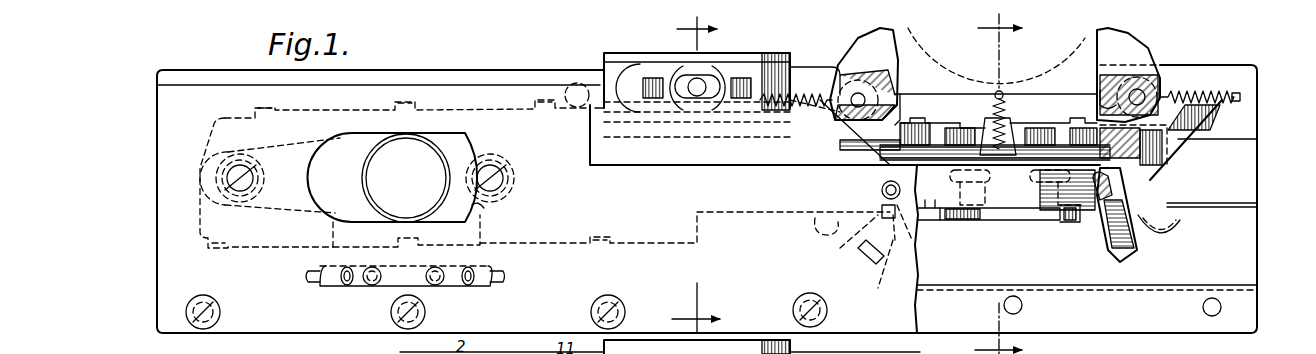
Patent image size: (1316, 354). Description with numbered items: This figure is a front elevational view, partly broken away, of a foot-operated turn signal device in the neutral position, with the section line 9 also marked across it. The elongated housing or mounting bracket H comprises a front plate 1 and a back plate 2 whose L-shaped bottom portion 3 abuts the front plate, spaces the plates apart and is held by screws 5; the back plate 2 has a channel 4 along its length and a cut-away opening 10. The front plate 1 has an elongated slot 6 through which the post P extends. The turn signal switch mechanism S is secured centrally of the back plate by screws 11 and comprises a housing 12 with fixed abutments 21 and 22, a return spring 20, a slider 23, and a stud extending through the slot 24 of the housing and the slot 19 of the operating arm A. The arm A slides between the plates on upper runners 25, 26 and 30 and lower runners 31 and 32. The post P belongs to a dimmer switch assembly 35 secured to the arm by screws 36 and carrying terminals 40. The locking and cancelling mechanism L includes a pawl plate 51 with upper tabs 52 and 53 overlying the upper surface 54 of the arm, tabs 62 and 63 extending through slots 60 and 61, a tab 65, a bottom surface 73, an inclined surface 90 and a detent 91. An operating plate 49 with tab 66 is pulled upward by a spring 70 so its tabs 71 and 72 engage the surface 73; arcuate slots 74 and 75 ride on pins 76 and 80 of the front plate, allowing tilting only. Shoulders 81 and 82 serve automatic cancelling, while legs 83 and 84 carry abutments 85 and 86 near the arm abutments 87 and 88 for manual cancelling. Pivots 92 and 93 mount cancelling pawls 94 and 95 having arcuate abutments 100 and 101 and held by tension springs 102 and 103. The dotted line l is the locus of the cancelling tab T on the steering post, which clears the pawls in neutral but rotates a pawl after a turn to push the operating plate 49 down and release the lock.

The front plate 1 is at (364, 85).
The back plate 2 is at (435, 70).
The L-shaped bottom portion 3 is at (1045, 285).
The channel 4 is at (1225, 142).
The screws 5 is at (141, 208).
The elongated slot 6 is at (480, 205).
The section line 9 is at (687, 175).
The opening 10 is at (1010, 184).
The screws 11 is at (572, 85).
The housing 12 is at (612, 60).
The slot 19 is at (705, 84).
The return spring 20 is at (658, 100).
The fixed abutment 21 is at (640, 90).
The fixed abutment 22 is at (742, 98).
The slider 23 is at (655, 75).
The slot 24 is at (742, 75).
The upper runner 25 is at (262, 108).
The upper runner 26 is at (548, 104).
The upper runner 30 is at (410, 106).
The lower runner 31 is at (222, 250).
The lower runner 32 is at (608, 243).
The dimmer switch assembly 35 is at (355, 127).
The screws 36 is at (262, 185).
The terminals 40 is at (340, 286).
The operating plate 49 is at (985, 195).
The pawl plate 51 is at (1178, 150).
The upper tab 52 is at (932, 112).
The upper tab 53 is at (1078, 117).
The upper surface 54 is at (960, 128).
The slot 60 is at (845, 120).
The slot 61 is at (1148, 150).
The tab 62 is at (948, 178).
The tab 63 is at (1055, 172).
The tab 65 is at (1005, 97).
The tab 66 is at (1003, 160).
The spring 70 is at (1012, 115).
The tab 71 is at (936, 220).
The tab 72 is at (1058, 225).
The bottom surface 73 is at (1000, 222).
The arcuate slot 74 is at (860, 240).
The arcuate slot 75 is at (1105, 212).
The pin 76 is at (880, 190).
The pin 80 is at (1120, 190).
The shoulder 81 is at (885, 138).
The shoulder 82 is at (1110, 150).
The leg 83 is at (884, 286).
The leg 84 is at (1135, 246).
The abutment 85 is at (868, 264).
The abutment 86 is at (1125, 258).
The abutment 87 is at (822, 235).
The abutment 88 is at (1180, 225).
The inclined surface 90 is at (890, 240).
The detent 91 is at (880, 210).
The pivot 92 is at (1142, 92).
The pivot 93 is at (857, 95).
The cancelling pawl 94 is at (1130, 52).
The cancelling pawl 95 is at (872, 66).
The arcuate abutment 100 is at (1102, 92).
The arcuate abutment 101 is at (900, 100).
The tension spring 102 is at (1232, 92).
The tension spring 103 is at (780, 112).
The operating arm A is at (215, 128).
The housing H is at (1223, 66).
The locking and cancelling mechanism L is at (1048, 107).
The post P is at (418, 189).
The turn signal switch mechanism S is at (690, 80).
The cancelling tab T is at (940, 28).
The locus line l is at (1062, 54).